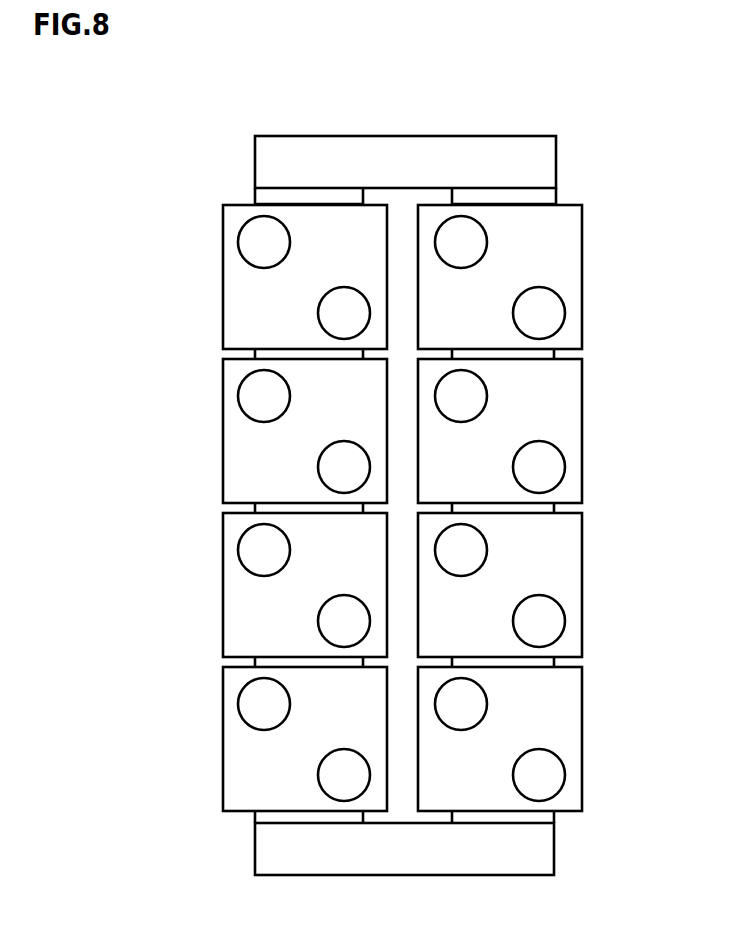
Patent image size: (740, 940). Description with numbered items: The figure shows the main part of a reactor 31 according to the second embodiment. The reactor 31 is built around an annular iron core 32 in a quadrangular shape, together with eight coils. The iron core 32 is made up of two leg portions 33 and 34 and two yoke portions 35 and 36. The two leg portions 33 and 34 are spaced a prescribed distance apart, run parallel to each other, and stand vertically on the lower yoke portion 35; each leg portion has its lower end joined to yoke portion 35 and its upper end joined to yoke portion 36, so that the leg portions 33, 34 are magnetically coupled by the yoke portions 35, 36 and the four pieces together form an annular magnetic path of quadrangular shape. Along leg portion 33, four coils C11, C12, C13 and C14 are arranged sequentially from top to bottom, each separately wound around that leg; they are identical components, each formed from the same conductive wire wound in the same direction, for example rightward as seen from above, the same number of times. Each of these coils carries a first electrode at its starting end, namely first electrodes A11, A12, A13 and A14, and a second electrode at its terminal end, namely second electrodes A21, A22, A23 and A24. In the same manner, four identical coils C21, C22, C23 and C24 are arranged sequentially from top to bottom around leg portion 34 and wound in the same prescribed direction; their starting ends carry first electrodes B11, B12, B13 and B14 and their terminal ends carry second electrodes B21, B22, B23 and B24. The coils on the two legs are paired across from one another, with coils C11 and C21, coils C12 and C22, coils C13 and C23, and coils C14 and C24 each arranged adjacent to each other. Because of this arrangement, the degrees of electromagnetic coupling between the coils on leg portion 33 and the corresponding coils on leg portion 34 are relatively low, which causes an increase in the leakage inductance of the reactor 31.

The reactor 31 is at (221, 94).
The iron core 32 is at (403, 876).
The leg portion 33 is at (272, 197).
The leg portion 34 is at (540, 198).
The yoke portion 35 is at (537, 849).
The yoke portion 36 is at (540, 163).
The coil C11 is at (223, 278).
The coil C12 is at (223, 432).
The coil C13 is at (223, 586).
The coil C14 is at (223, 740).
The coil C21 is at (582, 278).
The coil C22 is at (582, 432).
The coil C23 is at (582, 586).
The coil C24 is at (582, 740).
The first electrode A11 is at (264, 242).
The first electrode A12 is at (264, 396).
The first electrode A13 is at (264, 550).
The first electrode A14 is at (264, 704).
The second electrode A21 is at (344, 313).
The second electrode A22 is at (344, 467).
The second electrode A23 is at (344, 621).
The second electrode A24 is at (344, 775).
The first electrode B11 is at (461, 242).
The first electrode B12 is at (461, 396).
The first electrode B13 is at (461, 550).
The first electrode B14 is at (461, 704).
The second electrode B21 is at (539, 313).
The second electrode B22 is at (539, 467).
The second electrode B23 is at (539, 621).
The second electrode B24 is at (539, 775).